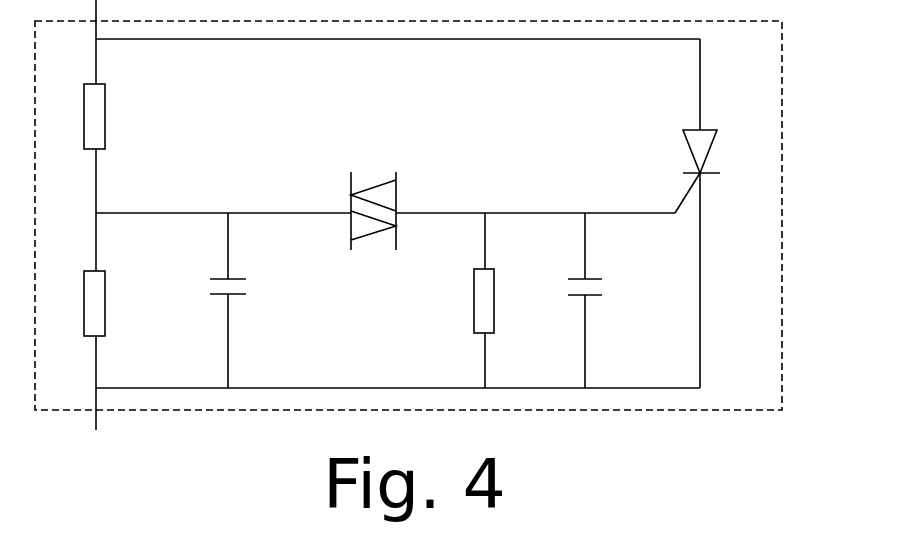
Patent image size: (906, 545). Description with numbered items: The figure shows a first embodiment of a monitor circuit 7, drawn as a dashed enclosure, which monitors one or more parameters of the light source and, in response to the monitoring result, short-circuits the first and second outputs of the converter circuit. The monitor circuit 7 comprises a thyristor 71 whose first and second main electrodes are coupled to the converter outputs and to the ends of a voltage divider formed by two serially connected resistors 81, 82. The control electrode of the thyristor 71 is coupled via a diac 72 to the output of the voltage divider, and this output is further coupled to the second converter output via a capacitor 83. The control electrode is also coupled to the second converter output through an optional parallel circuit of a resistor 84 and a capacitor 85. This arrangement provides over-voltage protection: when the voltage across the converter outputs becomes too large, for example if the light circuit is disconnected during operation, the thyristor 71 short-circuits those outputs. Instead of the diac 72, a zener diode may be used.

The monitor circuit 7 is at (735, 410).
The thyristor 71 is at (714, 170).
The diac 72 is at (373, 229).
The resistor 81 is at (112, 116).
The resistor 82 is at (112, 303).
The capacitor 83 is at (237, 300).
The resistor 84 is at (503, 300).
The capacitor 85 is at (593, 300).